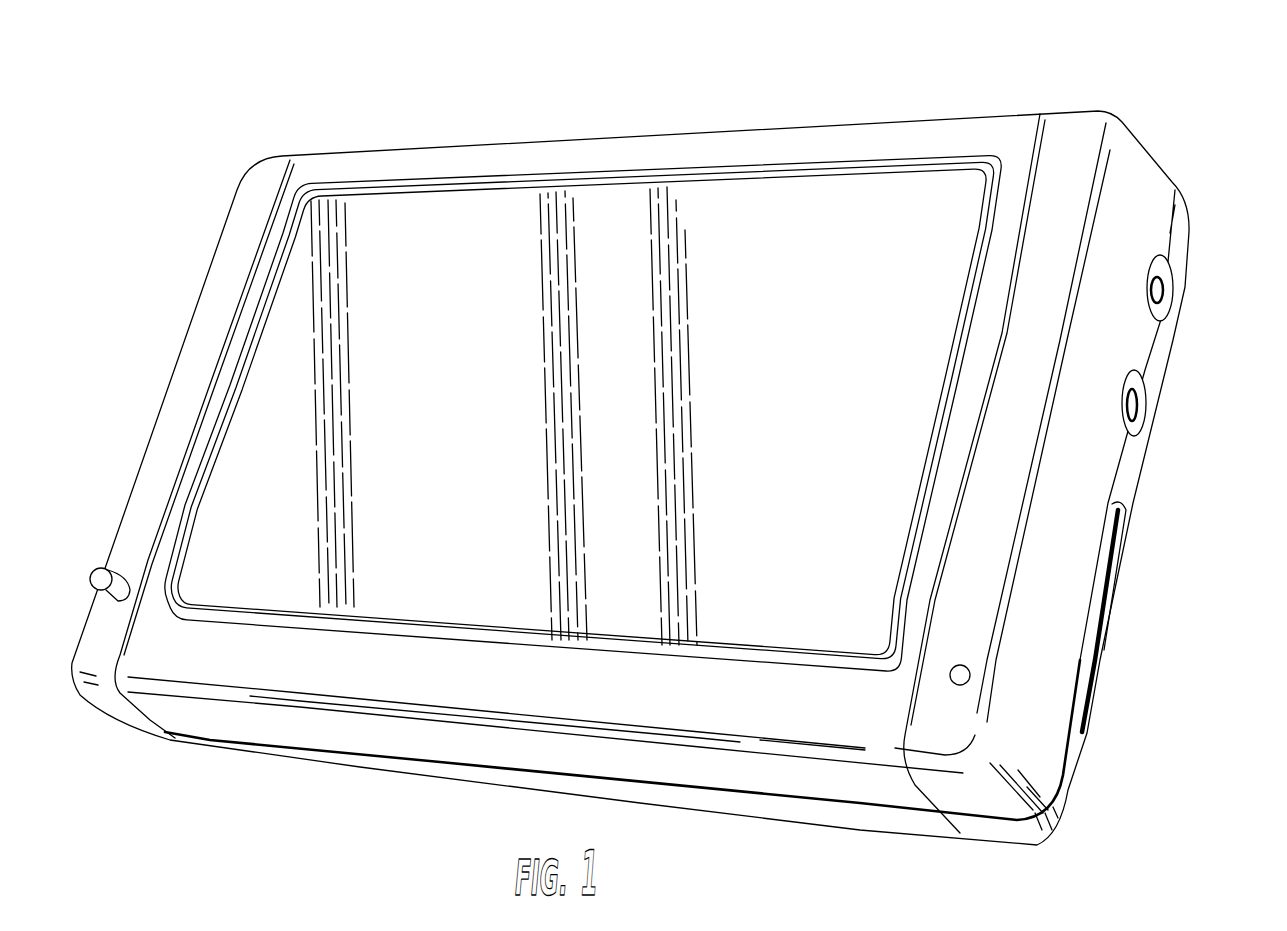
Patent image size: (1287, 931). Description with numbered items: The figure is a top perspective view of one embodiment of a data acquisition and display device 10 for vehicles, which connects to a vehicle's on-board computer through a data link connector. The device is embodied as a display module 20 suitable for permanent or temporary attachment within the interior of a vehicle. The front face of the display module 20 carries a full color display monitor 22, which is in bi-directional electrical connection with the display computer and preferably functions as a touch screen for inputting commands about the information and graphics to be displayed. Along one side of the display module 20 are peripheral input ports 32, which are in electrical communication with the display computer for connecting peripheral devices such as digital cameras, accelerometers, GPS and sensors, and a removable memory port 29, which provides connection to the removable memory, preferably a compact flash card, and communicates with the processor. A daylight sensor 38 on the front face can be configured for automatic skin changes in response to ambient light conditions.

The data acquisition and display device 10 is at (1108, 77).
The display module 20 is at (1140, 166).
The display monitor 22 is at (352, 222).
The removable memory port 29 is at (1113, 540).
The peripheral input port 32 is at (1163, 290).
The daylight sensor 38 is at (963, 681).